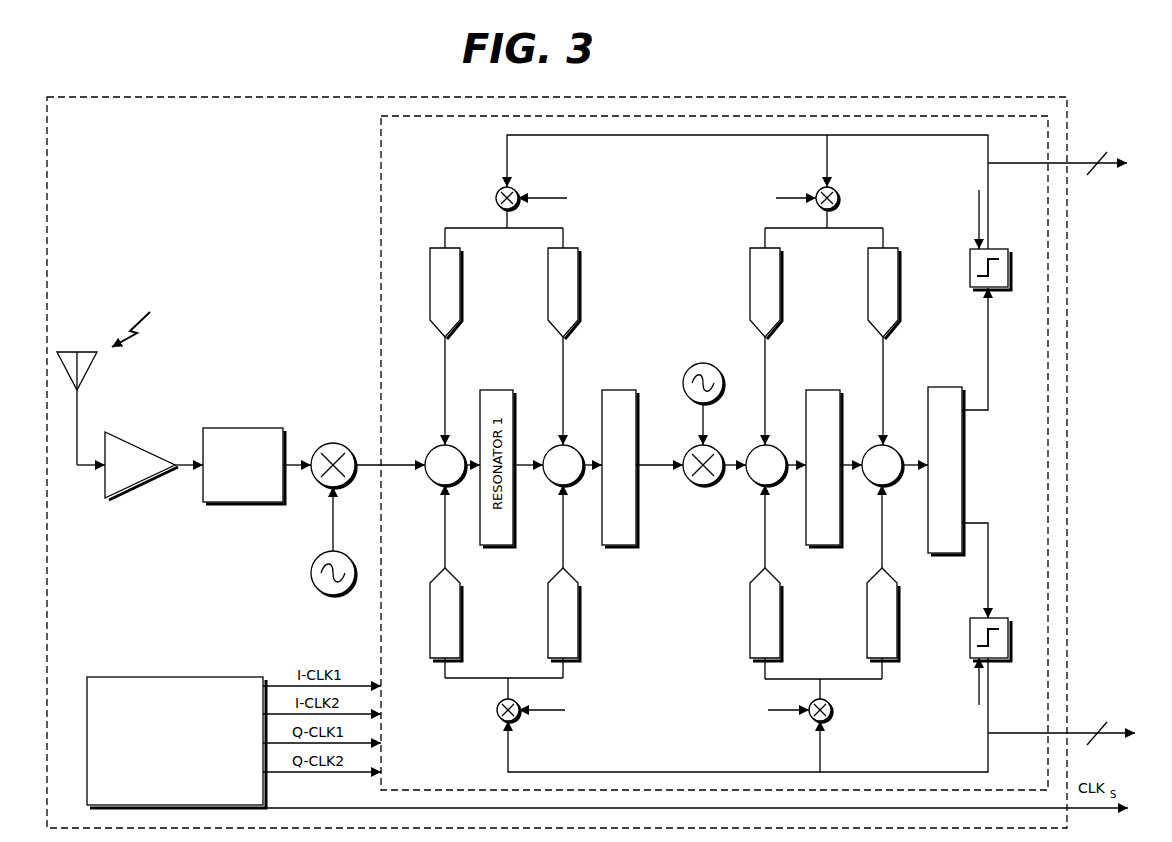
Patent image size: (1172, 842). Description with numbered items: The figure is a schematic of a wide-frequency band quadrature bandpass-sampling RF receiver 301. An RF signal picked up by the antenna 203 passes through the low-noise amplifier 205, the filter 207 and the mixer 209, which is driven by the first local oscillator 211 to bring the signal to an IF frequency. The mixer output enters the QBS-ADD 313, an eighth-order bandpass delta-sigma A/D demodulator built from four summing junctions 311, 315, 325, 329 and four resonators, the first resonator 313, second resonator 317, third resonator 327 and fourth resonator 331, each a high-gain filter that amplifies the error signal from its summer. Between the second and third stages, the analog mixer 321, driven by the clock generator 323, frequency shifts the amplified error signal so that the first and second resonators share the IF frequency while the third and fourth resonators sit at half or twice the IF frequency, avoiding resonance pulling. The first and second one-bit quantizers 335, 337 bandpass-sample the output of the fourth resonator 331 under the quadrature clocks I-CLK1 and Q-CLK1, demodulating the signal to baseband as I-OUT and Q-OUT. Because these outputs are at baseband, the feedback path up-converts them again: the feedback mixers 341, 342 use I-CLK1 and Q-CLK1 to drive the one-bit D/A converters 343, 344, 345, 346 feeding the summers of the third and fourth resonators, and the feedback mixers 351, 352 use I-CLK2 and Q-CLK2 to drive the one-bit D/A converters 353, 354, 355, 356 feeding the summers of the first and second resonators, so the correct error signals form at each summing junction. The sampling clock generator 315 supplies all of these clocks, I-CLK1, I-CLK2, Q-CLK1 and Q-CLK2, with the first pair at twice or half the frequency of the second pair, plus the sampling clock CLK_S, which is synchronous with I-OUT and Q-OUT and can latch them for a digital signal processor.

The antenna 203 is at (82, 350).
The low-noise amplifier (LNA) 205 is at (124, 432).
The filter 207 is at (226, 428).
The mixer 209 is at (333, 443).
The first local oscillator 211 is at (311, 578).
The wide-frequency band quadrature bandpass-sampling RF receiver 301 is at (190, 97).
The summer 311 is at (427, 479).
The QBS-ADD / first resonator 313 is at (380, 162).
The sampling clock generator / summer 315 is at (577, 485).
The second resonator 317 is at (619, 390).
The analog mixer 321 is at (703, 485).
The clock generator (second local oscillator) 323 is at (700, 363).
The summer 325 is at (752, 480).
The third resonator 327 is at (824, 390).
The summer 329 is at (892, 482).
The fourth resonator 331 is at (946, 387).
The first 1-bit quantizer 335 is at (1008, 618).
The second 1-bit quantizer 337 is at (1010, 249).
The feedback mixer 341 is at (812, 718).
The feedback mixer 342 is at (839, 192).
The 1-bit digital-to-analog converter 343 is at (867, 615).
The 1-bit digital-to-analog converter 344 is at (898, 305).
The 1-bit digital-to-analog converter 345 is at (750, 615).
The 1-bit digital-to-analog converter 346 is at (750, 298).
The feedback mixer 351 is at (500, 720).
The feedback mixer 352 is at (514, 190).
The 1-bit digital-to-analog converter 353 is at (548, 615).
The 1-bit digital-to-analog converter 354 is at (548, 290).
The 1-bit digital-to-analog converter 355 is at (460, 640).
The 1-bit digital-to-analog converter 356 is at (461, 312).